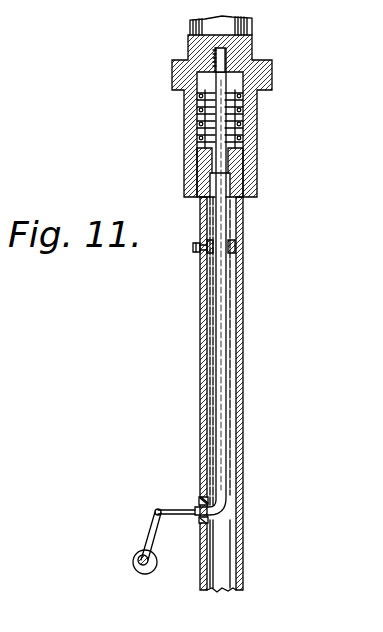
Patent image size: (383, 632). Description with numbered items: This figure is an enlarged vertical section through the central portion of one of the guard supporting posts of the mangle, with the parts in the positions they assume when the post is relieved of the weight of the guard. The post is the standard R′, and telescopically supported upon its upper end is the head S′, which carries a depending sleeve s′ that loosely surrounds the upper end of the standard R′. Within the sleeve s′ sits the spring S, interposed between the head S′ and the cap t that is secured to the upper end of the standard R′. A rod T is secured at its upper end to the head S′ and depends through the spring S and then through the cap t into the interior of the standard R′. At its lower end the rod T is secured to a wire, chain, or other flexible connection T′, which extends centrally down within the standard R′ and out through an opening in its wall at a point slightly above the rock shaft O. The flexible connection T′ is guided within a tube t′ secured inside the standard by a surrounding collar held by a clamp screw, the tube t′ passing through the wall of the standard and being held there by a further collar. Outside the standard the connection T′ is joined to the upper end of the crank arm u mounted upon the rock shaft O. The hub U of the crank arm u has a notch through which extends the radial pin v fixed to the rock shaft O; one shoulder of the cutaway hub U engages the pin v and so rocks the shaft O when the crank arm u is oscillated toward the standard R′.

The head S′ is at (252, 25).
The spring S is at (240, 127).
The depending sleeve s′ is at (258, 150).
The rod T is at (222, 132).
The cap t is at (198, 170).
The flexible connection T′ is at (230, 205).
The guide tube t′ is at (225, 313).
The standard R′ is at (250, 391).
The crank arm u is at (155, 530).
The radial pin v is at (133, 553).
The hub U is at (133, 570).
The rock shaft O is at (145, 575).